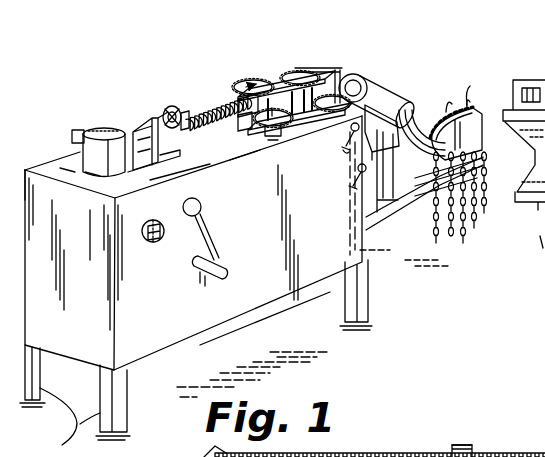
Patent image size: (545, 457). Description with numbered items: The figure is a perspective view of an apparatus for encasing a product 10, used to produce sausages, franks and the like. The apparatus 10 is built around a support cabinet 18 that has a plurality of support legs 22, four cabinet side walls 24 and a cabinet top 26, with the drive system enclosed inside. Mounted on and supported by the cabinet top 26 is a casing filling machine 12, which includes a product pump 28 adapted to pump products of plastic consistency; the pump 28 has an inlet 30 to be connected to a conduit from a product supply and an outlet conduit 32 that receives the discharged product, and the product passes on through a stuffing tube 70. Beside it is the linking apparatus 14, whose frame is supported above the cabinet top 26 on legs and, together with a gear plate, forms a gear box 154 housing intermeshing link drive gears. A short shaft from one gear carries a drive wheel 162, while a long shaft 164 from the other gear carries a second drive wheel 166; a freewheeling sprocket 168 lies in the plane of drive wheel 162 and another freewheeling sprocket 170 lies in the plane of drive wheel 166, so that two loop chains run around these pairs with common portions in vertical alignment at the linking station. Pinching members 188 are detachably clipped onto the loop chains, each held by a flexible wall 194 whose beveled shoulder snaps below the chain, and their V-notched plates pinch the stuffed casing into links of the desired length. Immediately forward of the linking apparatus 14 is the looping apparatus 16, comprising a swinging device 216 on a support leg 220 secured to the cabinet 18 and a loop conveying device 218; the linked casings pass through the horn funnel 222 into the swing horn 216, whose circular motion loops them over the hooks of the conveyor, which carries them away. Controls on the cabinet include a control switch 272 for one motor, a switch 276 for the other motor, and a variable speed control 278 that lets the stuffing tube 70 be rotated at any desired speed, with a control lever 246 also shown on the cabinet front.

The apparatus for encasing a product 10 is at (108, 108).
The casing filling machine 12 is at (148, 109).
The linking apparatus 14 is at (271, 70).
The looping apparatus 16 is at (471, 85).
The support cabinet 18 is at (170, 329).
The support legs 22 is at (347, 307).
The cabinet side walls 24 is at (264, 305).
The cabinet top 26 is at (206, 170).
The product pump 28 is at (52, 164).
The inlet 30 is at (80, 135).
The outlet conduit 32 is at (137, 194).
The stuffing tube 70 is at (176, 104).
The gear box 154 is at (246, 131).
The drive wheel 162 is at (268, 138).
The long shaft 164 is at (244, 78).
The drive wheel 166 is at (208, 110).
The freewheeling sprocket 168 is at (347, 76).
The freewheeling sprocket 170 is at (296, 70).
The pinching members 188 is at (533, 230).
The flexible wall 194 is at (452, 447).
The swinging device 216 is at (421, 108).
The loop conveying device 218 is at (478, 100).
The support leg 220 is at (378, 205).
The horn funnel 222 is at (382, 98).
The control lever 246 is at (208, 231).
The control switch 272 is at (343, 182).
The switch 276 is at (341, 143).
The variable speed control 278 is at (149, 244).